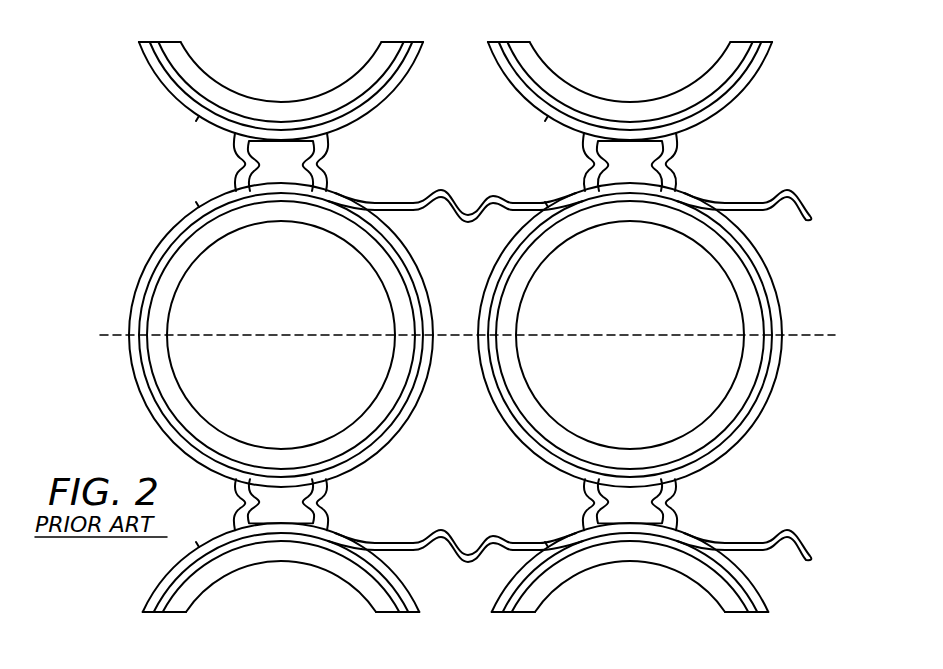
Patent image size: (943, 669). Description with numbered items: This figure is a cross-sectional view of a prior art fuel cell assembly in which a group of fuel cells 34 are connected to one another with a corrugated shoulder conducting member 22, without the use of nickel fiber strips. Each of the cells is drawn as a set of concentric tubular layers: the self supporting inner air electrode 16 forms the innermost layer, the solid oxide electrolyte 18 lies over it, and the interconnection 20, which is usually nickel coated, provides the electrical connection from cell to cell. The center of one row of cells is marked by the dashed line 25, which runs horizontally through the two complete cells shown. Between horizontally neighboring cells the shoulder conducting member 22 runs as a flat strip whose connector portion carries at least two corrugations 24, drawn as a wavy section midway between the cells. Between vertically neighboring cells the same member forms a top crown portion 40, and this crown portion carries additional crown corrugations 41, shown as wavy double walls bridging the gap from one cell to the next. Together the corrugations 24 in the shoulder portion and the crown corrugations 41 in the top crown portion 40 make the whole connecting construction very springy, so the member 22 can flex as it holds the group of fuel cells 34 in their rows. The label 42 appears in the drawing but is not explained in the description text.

The self supporting inner air electrode 16 is at (388, 62).
The solid oxide electrolyte 18 is at (372, 98).
The interconnection 20 is at (277, 130).
The shoulder conducting member 22 is at (399, 204).
The corrugations 24 is at (478, 205).
The dashed line 25 is at (469, 337).
The fuel cells 34 is at (112, 190).
The top crown portion 40 is at (255, 164).
The crown corrugations 41 is at (313, 168).
The outer band of ring 42 is at (346, 194).